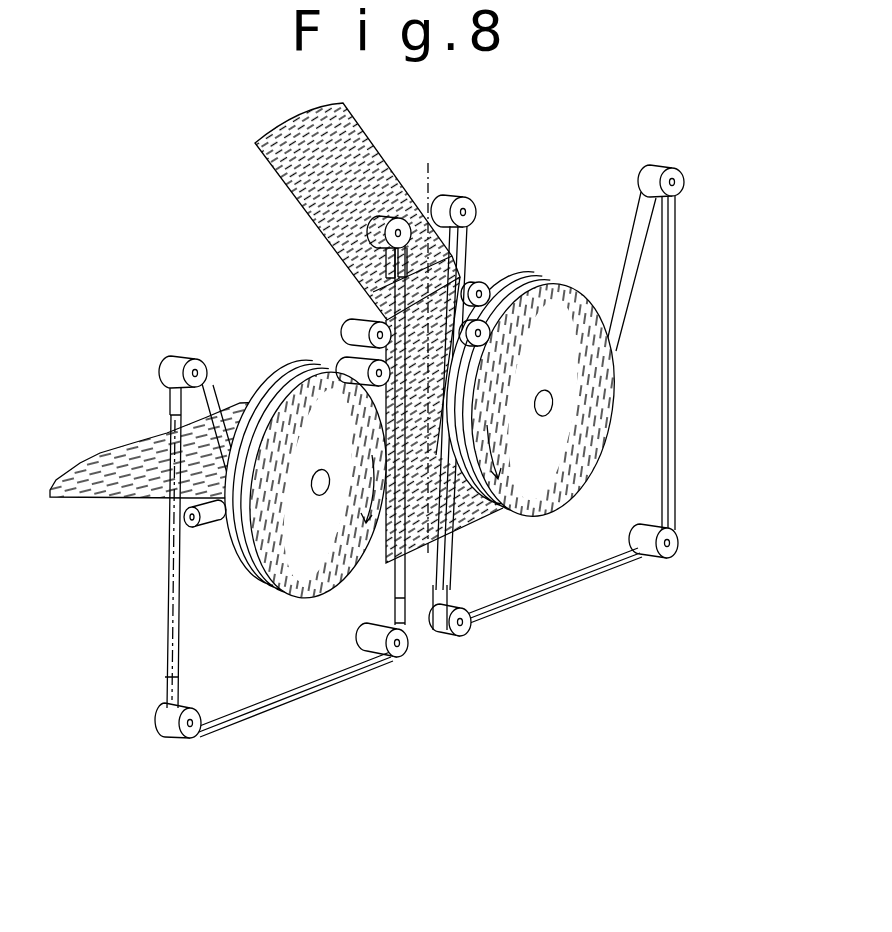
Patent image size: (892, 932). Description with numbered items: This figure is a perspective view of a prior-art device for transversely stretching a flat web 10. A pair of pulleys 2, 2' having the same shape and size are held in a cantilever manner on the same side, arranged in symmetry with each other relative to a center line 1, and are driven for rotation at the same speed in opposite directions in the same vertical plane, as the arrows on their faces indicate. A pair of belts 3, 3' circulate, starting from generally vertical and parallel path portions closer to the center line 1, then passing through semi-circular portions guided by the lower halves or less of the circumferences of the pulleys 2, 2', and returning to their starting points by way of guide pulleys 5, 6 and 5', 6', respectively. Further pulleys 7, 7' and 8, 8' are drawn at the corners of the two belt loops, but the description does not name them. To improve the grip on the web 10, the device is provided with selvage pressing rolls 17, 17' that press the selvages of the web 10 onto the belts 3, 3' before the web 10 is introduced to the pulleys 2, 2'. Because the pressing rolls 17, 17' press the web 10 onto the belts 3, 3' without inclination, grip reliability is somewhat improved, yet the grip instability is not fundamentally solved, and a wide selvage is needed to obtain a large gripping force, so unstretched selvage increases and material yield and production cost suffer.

The center line 1 is at (428, 163).
The pulley 2 is at (305, 562).
The pulley 2' is at (532, 456).
The belt 3 is at (295, 706).
The belt 3' is at (554, 616).
The guide pulley 5 is at (337, 243).
The guide pulley 5' is at (492, 185).
The guide pulley 6 is at (394, 677).
The guide pulley 6' is at (460, 648).
The first corner pulley 7 is at (210, 749).
The second corner pulley 7' is at (672, 572).
The first upper pulley 8 is at (210, 483).
The second upper pulley 8' is at (672, 334).
The web 10 is at (466, 250).
The selvage pressing roll 17 is at (344, 322).
The selvage pressing roll 17' is at (508, 281).